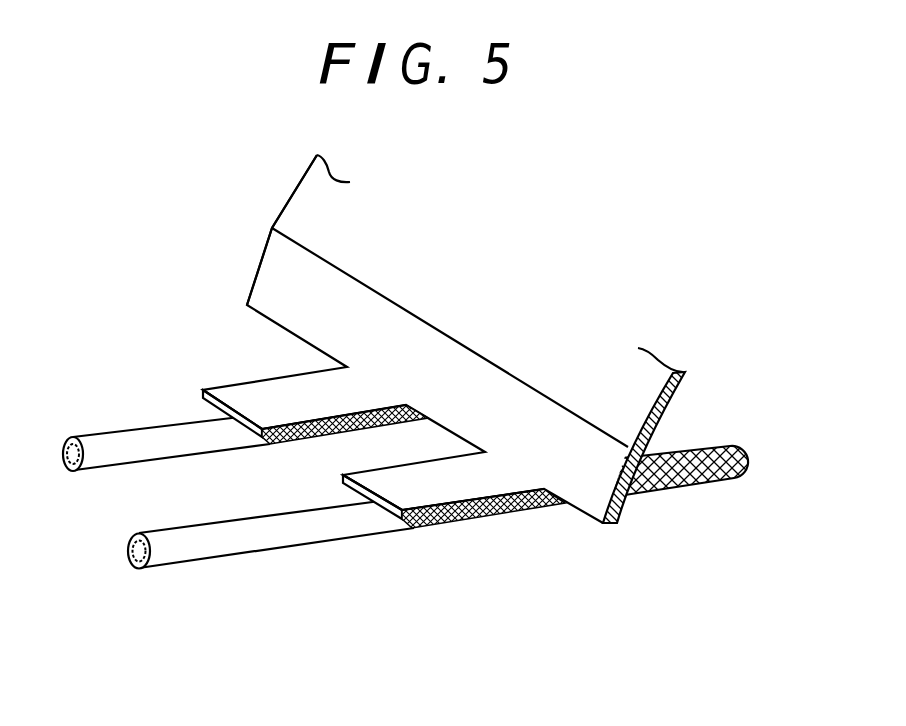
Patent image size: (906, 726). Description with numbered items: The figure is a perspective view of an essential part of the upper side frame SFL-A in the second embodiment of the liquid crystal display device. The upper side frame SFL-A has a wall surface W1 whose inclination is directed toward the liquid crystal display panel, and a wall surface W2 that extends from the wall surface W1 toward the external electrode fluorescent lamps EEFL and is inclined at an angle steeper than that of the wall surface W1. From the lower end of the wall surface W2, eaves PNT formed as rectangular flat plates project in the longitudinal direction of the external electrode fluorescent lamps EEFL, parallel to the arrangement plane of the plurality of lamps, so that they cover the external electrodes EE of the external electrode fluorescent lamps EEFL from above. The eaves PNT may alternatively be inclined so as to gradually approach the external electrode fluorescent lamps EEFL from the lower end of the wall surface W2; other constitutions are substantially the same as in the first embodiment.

The wall surface W1 is at (305, 208).
The wall surface W2 is at (270, 280).
The upper side frame SFL-A is at (582, 324).
The external electrode EE is at (682, 485).
The eaves PNT is at (463, 490).
The external electrode fluorescent lamp EEFL is at (220, 543).